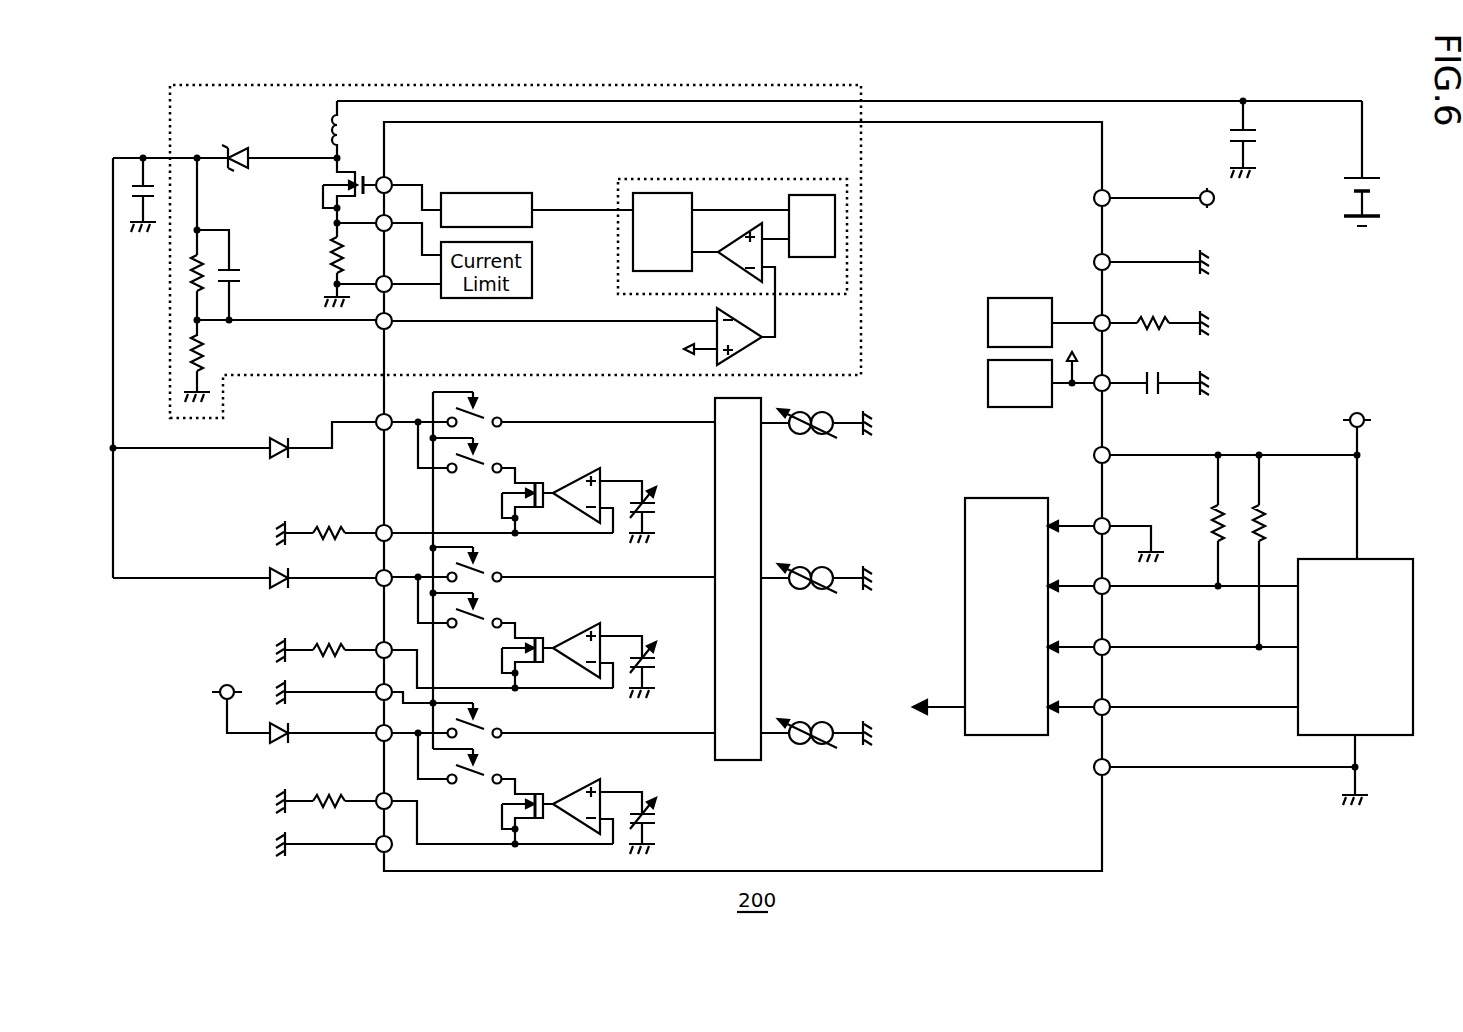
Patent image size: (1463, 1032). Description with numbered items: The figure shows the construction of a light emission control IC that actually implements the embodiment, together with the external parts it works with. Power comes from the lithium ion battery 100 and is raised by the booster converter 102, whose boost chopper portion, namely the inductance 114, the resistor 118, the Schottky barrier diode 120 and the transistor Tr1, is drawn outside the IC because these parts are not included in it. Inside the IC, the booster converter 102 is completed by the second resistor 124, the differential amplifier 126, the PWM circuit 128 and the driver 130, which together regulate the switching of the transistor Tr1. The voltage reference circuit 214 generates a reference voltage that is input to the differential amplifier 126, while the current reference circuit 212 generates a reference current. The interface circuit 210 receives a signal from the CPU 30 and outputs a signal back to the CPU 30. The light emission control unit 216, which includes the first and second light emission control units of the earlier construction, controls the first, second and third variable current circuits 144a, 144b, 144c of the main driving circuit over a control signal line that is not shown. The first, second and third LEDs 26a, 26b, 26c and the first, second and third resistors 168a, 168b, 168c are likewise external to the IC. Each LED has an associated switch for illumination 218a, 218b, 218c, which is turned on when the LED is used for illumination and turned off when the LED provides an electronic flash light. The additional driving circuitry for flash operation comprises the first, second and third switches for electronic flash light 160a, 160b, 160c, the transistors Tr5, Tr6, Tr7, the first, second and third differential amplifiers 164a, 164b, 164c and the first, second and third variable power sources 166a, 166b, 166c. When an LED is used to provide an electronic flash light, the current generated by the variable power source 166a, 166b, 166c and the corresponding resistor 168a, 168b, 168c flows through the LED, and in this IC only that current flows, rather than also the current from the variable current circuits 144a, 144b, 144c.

The booster converter 102 is at (170, 125).
The Schottky barrier diode 120 is at (229, 146).
The inductance 114 is at (332, 126).
The transistor Tr1 is at (323, 184).
The resistor 118 is at (333, 256).
The second resistor 124 is at (206, 352).
The driver 130 is at (488, 193).
The PWM circuit 128 is at (736, 179).
The differential amplifier 126 is at (748, 351).
The first LED 26a is at (281, 437).
The second LED 26b is at (284, 591).
The third LED 26c is at (284, 746).
The first resistor 168a is at (338, 526).
The second resistor 168b is at (338, 643).
The third resistor 168c is at (338, 794).
The first switch for illumination 218a is at (490, 405).
The second switch for illumination 218b is at (549, 564).
The third switch for illumination 218c is at (549, 720).
The first switch for electronic flash light 160a is at (490, 451).
The second switch for electronic flash light 160b is at (494, 634).
The third switch for electronic flash light 160c is at (493, 790).
The transistor Tr5 is at (500, 492).
The transistor Tr6 is at (496, 655).
The transistor Tr7 is at (496, 811).
The first differential amplifier 164a is at (590, 470).
The second differential amplifier 164b is at (609, 642).
The third differential amplifier 164c is at (608, 798).
The first variable power source 166a is at (658, 512).
The second variable power source 166b is at (669, 691).
The third variable power source 166c is at (682, 826).
The light emission control unit 216 is at (737, 761).
The first variable current circuit 144a is at (811, 441).
The second variable current circuit 144b is at (811, 596).
The third variable current circuit 144c is at (811, 751).
The Iref circuit 212 is at (988, 323).
The Vref circuit 214 is at (988, 383).
The interface circuit 210 is at (990, 498).
The CPU 30 is at (1380, 560).
The lithium ion battery 100 is at (1345, 181).